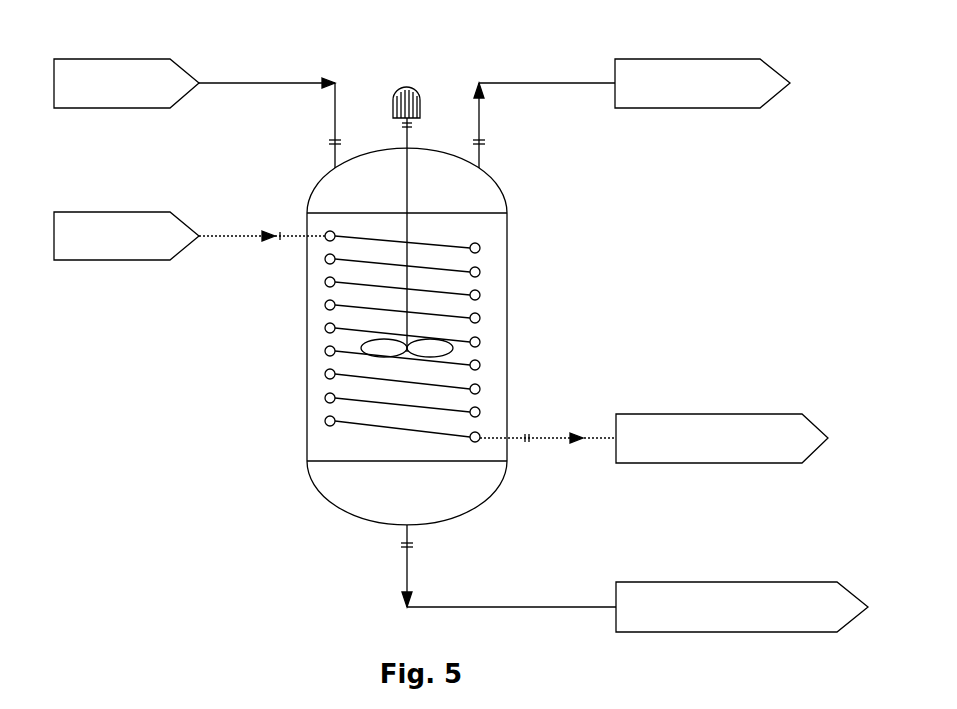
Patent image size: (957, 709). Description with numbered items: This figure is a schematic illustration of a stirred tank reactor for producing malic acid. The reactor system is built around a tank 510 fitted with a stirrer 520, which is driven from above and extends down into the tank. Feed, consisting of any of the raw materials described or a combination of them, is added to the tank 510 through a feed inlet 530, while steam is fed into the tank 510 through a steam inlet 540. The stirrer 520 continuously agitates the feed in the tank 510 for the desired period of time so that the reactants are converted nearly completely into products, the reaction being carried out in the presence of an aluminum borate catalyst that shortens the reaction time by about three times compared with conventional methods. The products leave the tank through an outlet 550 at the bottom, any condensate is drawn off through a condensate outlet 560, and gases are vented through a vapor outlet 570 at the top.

The tank 510 is at (325, 515).
The stirrer 520 is at (410, 70).
The feed inlet 530 is at (194, 83).
The steam inlet 540 is at (189, 236).
The outlet 550 is at (635, 607).
The condensate outlet 560 is at (654, 438).
The vapor outlet 570 is at (632, 83).